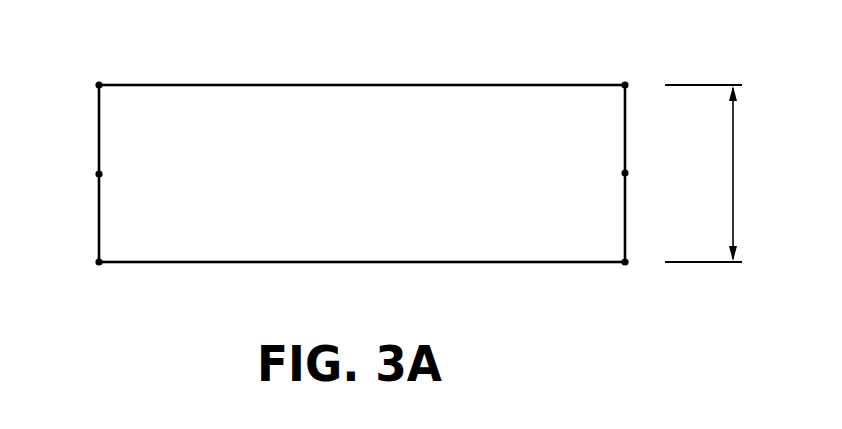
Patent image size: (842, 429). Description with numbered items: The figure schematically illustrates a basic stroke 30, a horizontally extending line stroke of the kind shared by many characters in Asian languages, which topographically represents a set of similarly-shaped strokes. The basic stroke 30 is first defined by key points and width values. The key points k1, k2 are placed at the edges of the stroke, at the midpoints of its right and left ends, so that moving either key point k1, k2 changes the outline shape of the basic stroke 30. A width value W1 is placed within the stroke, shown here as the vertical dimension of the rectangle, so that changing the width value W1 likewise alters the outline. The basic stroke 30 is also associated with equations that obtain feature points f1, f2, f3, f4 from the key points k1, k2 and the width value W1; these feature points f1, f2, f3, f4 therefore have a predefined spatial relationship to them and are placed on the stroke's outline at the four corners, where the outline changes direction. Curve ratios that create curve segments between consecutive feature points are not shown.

The basic stroke 30 is at (362, 85).
The feature point f1 is at (636, 71).
The feature point f2 is at (636, 249).
The feature point f3 is at (83, 73).
The feature point f4 is at (83, 250).
The key point k1 is at (639, 160).
The key point k2 is at (83, 161).
The width value W1 is at (721, 173).